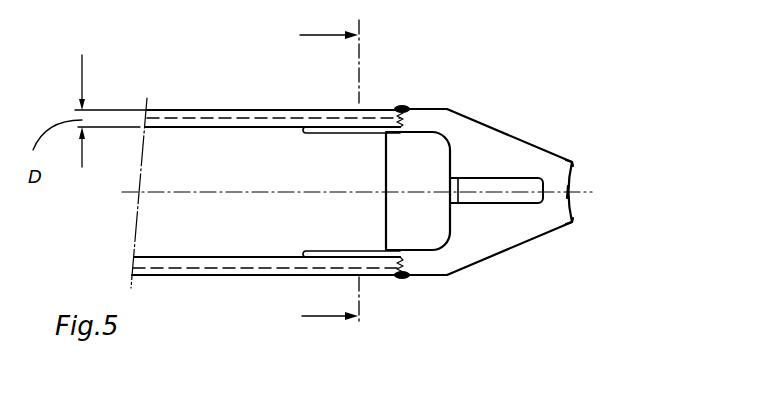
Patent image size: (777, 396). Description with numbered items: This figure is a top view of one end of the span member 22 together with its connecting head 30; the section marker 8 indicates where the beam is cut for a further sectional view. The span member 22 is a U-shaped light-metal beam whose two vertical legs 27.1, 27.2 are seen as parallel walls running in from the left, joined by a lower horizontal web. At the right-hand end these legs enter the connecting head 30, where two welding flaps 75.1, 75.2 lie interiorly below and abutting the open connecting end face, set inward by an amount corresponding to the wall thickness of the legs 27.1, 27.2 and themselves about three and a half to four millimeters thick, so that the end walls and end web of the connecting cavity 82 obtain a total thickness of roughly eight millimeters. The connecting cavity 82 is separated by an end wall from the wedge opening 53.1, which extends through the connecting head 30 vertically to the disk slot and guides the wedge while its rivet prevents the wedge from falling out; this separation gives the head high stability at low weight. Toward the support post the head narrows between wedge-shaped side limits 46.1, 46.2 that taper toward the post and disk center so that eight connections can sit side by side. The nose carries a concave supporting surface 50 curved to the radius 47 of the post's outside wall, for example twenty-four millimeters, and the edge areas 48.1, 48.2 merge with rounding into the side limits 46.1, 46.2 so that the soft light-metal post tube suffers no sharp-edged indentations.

The span member 22 is at (267, 194).
The vertical leg 27.1 is at (222, 108).
The vertical leg 27.2 is at (190, 268).
The welding flap 75.1 is at (342, 133).
The welding flap 75.2 is at (347, 250).
The connecting cavity 82 is at (418, 191).
The wedge opening 53.1 is at (480, 187).
The side limit 46.1 is at (495, 128).
The side limit 46.2 is at (502, 258).
The edge area 48.1 is at (573, 160).
The edge area 48.2 is at (572, 224).
The radius 47 is at (593, 174).
The supporting surface 50 is at (572, 198).
The connecting head 30 is at (537, 205).
The section line VIII-VIII 8 is at (332, 177).